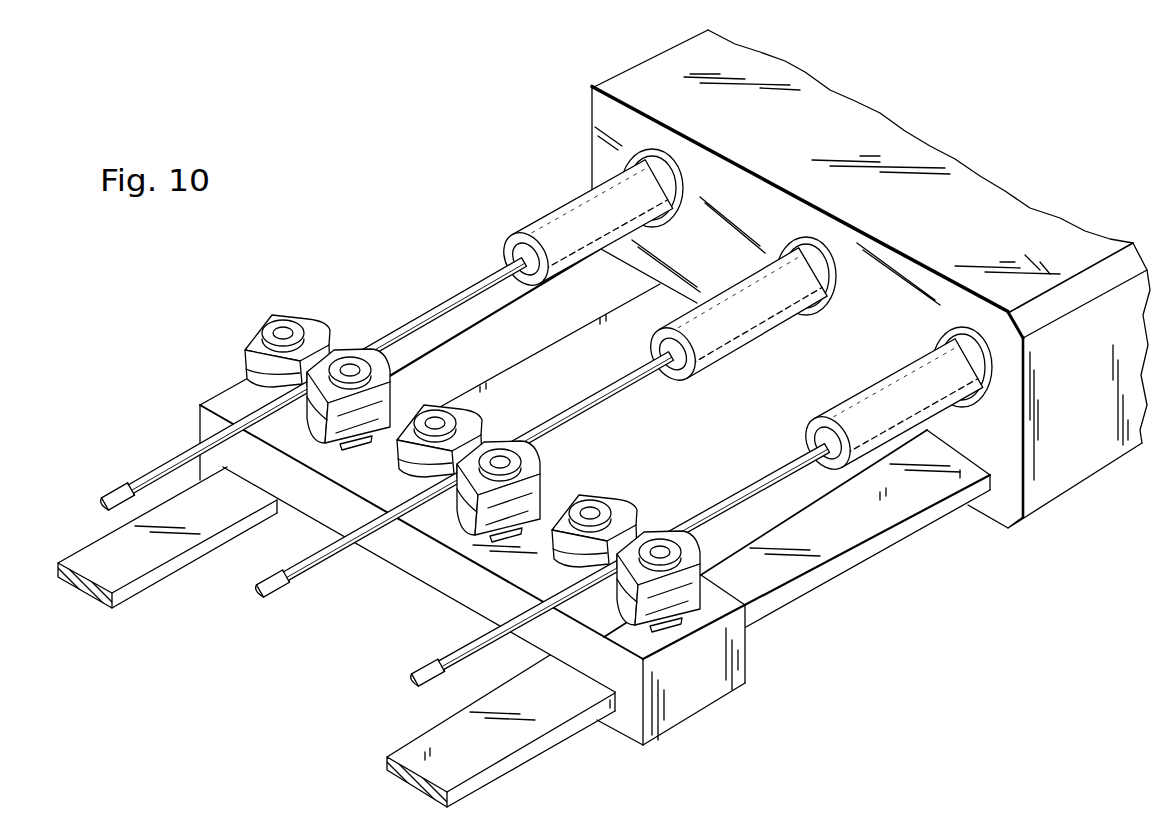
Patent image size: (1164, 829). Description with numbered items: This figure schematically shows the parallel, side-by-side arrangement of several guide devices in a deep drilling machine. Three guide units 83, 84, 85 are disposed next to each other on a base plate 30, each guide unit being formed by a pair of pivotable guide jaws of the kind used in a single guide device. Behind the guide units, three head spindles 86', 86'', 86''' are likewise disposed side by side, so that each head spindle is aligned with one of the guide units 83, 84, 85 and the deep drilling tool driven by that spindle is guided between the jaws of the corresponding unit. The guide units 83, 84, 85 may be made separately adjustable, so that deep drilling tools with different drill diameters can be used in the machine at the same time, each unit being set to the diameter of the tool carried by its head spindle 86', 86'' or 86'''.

The base plate 30 is at (693, 697).
The guide unit 83 is at (341, 328).
The guide unit 84 is at (492, 439).
The guide unit 85 is at (649, 523).
The head spindle 86' is at (387, 335).
The head spindle 86'' is at (541, 422).
The head spindle 86''' is at (697, 512).